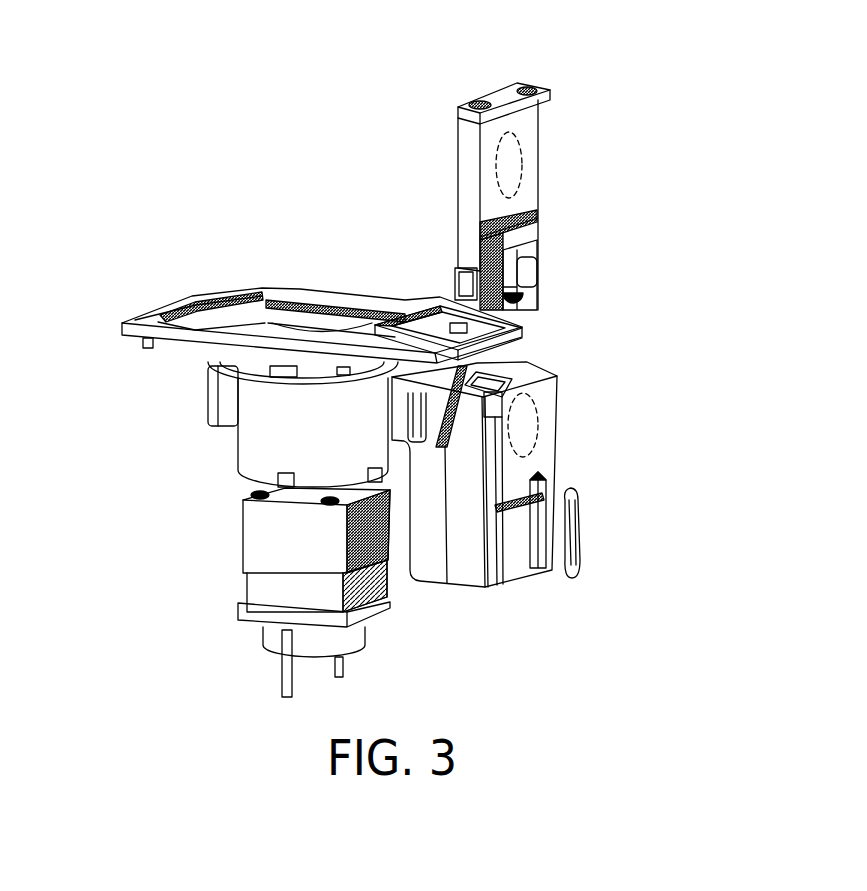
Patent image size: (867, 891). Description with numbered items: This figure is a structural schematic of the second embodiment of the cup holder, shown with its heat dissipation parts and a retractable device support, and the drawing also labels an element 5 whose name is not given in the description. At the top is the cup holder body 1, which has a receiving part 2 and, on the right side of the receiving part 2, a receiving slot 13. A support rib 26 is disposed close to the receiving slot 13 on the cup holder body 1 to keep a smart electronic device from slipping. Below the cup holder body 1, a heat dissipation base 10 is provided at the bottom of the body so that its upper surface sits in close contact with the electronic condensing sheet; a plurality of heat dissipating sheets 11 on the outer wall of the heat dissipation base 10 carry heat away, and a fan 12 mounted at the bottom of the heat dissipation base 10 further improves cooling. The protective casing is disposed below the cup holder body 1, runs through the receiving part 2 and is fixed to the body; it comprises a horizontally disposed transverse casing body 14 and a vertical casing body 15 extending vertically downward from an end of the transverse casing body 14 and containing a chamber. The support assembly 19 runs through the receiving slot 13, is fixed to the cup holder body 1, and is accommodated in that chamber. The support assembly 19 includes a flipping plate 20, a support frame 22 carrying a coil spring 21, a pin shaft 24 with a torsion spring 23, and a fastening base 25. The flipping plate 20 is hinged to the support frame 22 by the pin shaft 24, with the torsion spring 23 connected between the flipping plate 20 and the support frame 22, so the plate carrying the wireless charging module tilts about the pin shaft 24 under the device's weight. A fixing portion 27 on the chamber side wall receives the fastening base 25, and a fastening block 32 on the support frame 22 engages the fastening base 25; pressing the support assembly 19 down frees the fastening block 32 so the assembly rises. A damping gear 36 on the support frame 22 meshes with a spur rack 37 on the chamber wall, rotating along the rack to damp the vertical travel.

The cup holder body 1 is at (267, 287).
The receiving part 2 is at (258, 455).
The top cover of module 5 is at (528, 82).
The heat dissipation base 10 is at (258, 545).
The heat dissipating sheets 11 is at (380, 570).
The fan 12 is at (298, 597).
The receiving slot 13 is at (403, 305).
The transverse casing body 14 is at (200, 400).
The vertical casing body 15 is at (557, 440).
The support assembly 19 is at (578, 181).
The flipping plate 20 is at (530, 167).
The coil spring 21 is at (527, 290).
The support frame 22 is at (540, 262).
The torsion spring 23 is at (540, 213).
The pin shaft 24 is at (537, 235).
The fastening base 25 is at (590, 540).
The support rib 26 is at (417, 305).
The fixing portion 27 is at (546, 497).
The fastening block 32 is at (573, 301).
The damping gear 36 is at (473, 257).
The spur rack 37 is at (492, 505).